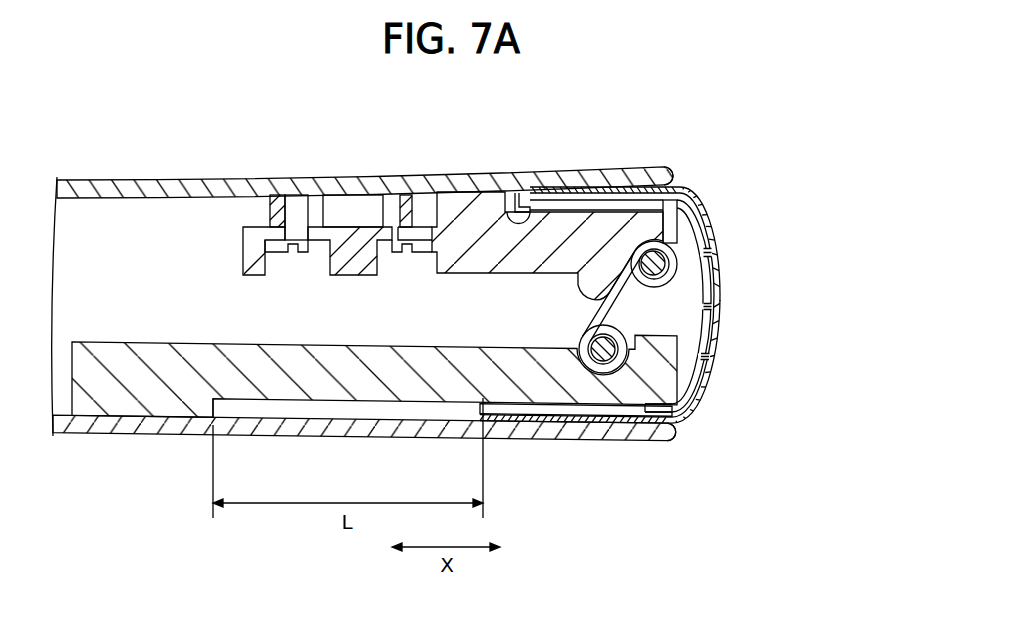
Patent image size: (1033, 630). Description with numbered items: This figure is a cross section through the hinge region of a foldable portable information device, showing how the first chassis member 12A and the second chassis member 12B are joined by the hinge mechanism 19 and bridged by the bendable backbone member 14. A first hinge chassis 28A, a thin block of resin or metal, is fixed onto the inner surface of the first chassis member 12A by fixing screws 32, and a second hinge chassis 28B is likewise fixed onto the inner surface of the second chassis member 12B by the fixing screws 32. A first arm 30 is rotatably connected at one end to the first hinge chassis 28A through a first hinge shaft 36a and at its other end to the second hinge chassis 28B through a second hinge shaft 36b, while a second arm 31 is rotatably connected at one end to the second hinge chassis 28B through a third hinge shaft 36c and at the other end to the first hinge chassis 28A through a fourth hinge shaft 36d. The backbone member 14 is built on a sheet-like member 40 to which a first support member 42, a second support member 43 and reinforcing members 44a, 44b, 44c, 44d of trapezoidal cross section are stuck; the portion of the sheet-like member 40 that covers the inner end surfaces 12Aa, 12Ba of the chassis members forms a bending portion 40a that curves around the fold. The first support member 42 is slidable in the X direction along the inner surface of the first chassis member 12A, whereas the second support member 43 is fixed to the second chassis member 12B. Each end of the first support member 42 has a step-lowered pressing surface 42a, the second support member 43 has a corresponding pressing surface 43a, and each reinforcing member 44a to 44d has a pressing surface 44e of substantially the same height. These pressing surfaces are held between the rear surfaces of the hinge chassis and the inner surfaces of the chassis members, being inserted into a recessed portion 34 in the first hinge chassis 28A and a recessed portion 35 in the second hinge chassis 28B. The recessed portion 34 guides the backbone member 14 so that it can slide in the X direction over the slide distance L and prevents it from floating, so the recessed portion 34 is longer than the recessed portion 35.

The first chassis member 12A is at (310, 437).
The inner end surface 12Aa is at (690, 442).
The second chassis member 12B is at (265, 178).
The inner end surface 12Ba is at (679, 178).
The backbone member 14 is at (714, 431).
The hinge mechanism 19 is at (234, 240).
The first hinge chassis 28A is at (152, 398).
The second hinge chassis 28B is at (480, 208).
The first arm 30 is at (596, 311).
The second arm 31 is at (580, 307).
The fixing screws 32 is at (298, 215).
The recessed portion 34 is at (410, 410).
The recessed portion 35 is at (556, 209).
The first hinge shaft 36a is at (616, 352).
The second hinge shaft 36b is at (668, 257).
The third hinge shaft 36c is at (740, 246).
The fourth hinge shaft 36d is at (710, 368).
The sheet-like member 40 is at (635, 305).
The bending portion 40a is at (720, 262).
The first support member 42 is at (565, 424).
The pressing surface 42a is at (492, 415).
The second support member 43 is at (600, 186).
The pressing surface 43a is at (517, 205).
The reinforcing member 44a is at (692, 400).
The reinforcing member 44b is at (717, 325).
The reinforcing member 44c is at (718, 290).
The reinforcing member 44d is at (698, 222).
The pressing surface 44e is at (694, 191).